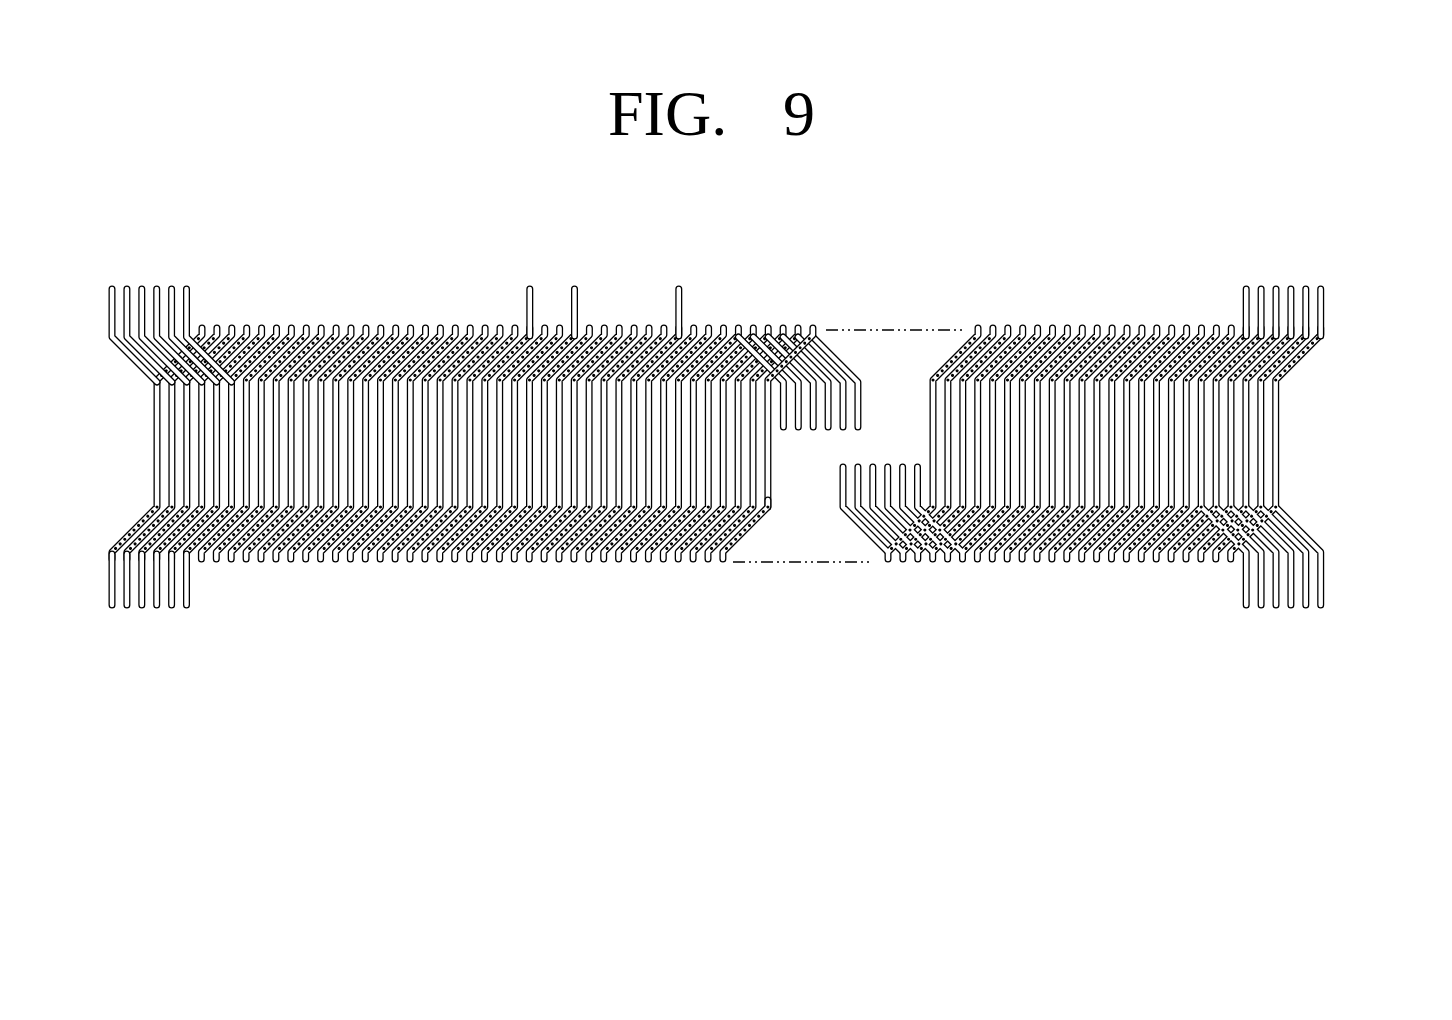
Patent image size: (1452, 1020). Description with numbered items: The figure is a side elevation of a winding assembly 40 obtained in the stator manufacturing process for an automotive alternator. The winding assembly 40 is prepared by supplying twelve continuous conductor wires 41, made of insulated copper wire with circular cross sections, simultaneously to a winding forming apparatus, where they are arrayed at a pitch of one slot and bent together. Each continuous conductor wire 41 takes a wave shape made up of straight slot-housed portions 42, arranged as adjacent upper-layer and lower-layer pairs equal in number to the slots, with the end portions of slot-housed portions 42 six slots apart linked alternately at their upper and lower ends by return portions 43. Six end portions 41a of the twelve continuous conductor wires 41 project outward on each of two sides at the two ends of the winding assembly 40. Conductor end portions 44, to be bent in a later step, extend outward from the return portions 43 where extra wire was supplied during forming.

The winding assembly 40 is at (411, 213).
The continuous conductor wire 41 is at (1144, 447).
The end portion 41a is at (1332, 309).
The slot-housed portion 42 is at (764, 470).
The return portion 43 is at (738, 545).
The conductor end portion 44 is at (686, 296).